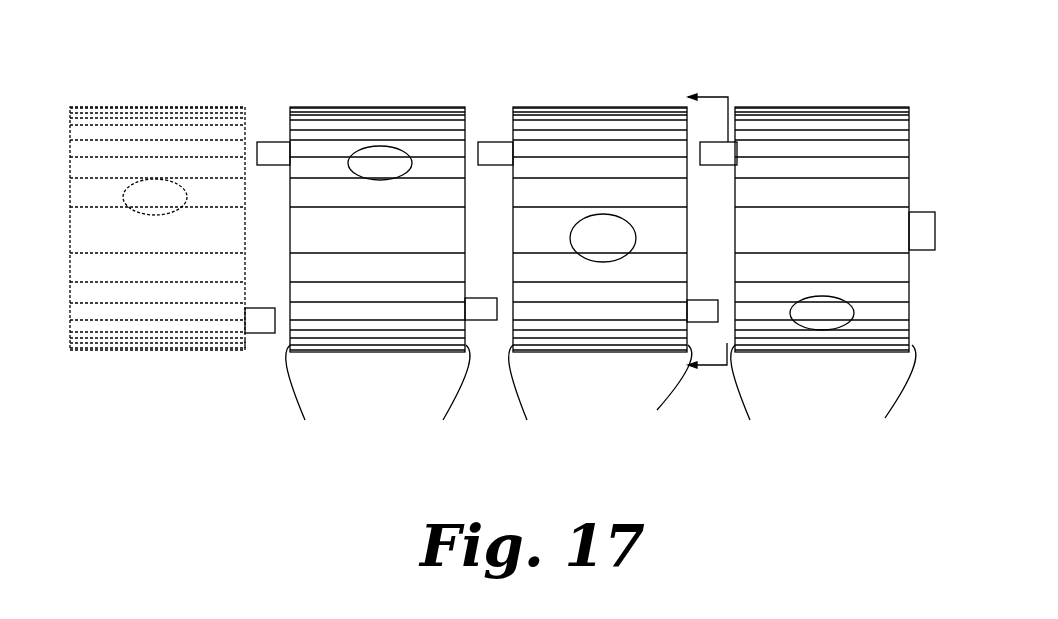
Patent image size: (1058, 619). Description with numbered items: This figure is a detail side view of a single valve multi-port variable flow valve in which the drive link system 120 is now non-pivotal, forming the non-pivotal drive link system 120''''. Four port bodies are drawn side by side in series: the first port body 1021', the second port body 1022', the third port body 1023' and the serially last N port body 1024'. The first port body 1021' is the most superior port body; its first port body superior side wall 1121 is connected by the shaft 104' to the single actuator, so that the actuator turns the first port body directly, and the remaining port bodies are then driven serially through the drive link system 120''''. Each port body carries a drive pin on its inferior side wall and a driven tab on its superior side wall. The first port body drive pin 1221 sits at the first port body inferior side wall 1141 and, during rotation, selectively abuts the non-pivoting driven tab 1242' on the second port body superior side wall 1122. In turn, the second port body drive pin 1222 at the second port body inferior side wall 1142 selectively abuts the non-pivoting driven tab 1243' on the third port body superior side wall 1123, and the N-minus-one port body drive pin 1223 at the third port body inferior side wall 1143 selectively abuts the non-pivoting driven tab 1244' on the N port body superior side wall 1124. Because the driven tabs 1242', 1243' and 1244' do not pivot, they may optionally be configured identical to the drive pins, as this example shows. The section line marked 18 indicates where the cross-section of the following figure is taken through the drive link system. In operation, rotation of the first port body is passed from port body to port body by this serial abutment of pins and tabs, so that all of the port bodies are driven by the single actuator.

The drive link system 120 is at (502, 229).
The N port body 1024' is at (166, 183).
The third port body 1023' is at (379, 186).
The second port body 1022' is at (600, 180).
The first port body 1021' is at (822, 182).
The non-pivotal drive link system 120'''' is at (502, 92).
The N−1 port body drive pin 1223 is at (262, 142).
The second port body drive pin 1222 is at (483, 142).
The first port body drive pin 1221 is at (705, 142).
The non-pivoting driven tab 1244' is at (270, 371).
The non-pivoting driven tab 1243' is at (491, 366).
The non-pivoting driven tab 1242' is at (771, 272).
The shaft 104' is at (912, 157).
The N port body superior side wall 1124 is at (252, 350).
The third port body inferior side wall 1143 is at (317, 398).
The third port body superior side wall 1123 is at (438, 395).
The second port body inferior side wall 1142 is at (541, 396).
The second port body superior side wall 1122 is at (652, 393).
The first port body inferior side wall 1141 is at (762, 397).
The first port body superior side wall 1121 is at (886, 397).
The section line 18- 18 is at (705, 233).